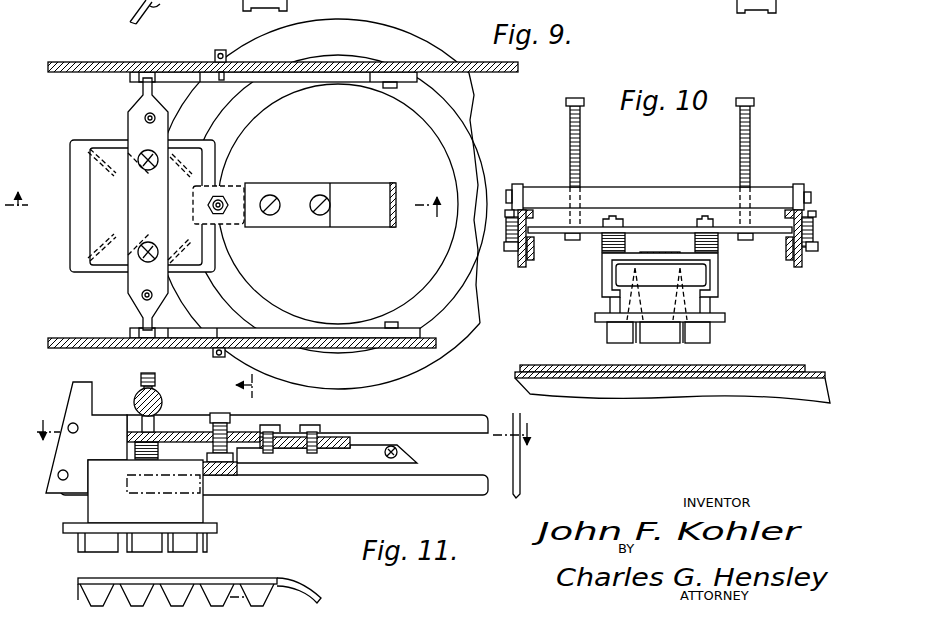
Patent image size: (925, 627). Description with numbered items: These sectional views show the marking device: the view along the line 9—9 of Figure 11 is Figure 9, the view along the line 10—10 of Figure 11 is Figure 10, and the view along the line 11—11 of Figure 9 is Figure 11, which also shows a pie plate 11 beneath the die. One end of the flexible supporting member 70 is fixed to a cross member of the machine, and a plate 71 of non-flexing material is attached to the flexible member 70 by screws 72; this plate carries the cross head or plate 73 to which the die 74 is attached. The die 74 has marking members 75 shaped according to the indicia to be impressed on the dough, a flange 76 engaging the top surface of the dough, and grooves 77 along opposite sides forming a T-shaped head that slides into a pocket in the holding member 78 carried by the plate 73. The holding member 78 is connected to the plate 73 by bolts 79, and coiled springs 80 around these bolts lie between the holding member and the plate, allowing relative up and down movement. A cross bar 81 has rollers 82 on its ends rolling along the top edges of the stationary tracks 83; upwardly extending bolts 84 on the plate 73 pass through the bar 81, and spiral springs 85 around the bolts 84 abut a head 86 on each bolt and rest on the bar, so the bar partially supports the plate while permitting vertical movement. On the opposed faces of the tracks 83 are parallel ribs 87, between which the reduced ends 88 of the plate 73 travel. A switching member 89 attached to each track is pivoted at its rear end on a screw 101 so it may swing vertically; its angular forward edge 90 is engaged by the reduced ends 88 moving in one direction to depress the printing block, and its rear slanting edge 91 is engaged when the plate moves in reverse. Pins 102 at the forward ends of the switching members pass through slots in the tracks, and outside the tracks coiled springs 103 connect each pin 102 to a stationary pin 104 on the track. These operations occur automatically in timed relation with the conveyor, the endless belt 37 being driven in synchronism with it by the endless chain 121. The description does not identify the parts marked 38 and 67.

In FIG. 11, the section line 9— 9 is at (288, 440).
In FIG. 9, the section line 10— 10 is at (255, 386).
In FIG. 11, the section line 10— 10 is at (228, 602).
In FIG. 9, the pie plate 11 is at (222, 197).
In FIG. 10, the pie plate 11 is at (712, 397).
In FIG. 11, the endless belt 37 is at (225, 580).
In FIG. 11, the curved tongue of rack 38 is at (283, 594).
In FIG. 9, the mounting bolt 67 is at (226, 42).
In FIG. 9, the flexible supporting member 70 is at (320, 205).
In FIG. 11, the flexible supporting member 70 is at (341, 435).
In FIG. 9, the plate 71 is at (210, 205).
In FIG. 9, the screws 72 is at (270, 197).
In FIG. 9, the cross head 73 is at (148, 204).
In FIG. 10, the cross head 73 is at (657, 226).
In FIG. 11, the cross head 73 is at (183, 430).
In FIG. 10, the die 74 is at (617, 280).
In FIG. 9, the marking members 75 is at (108, 182).
In FIG. 10, the marking members 75 is at (607, 338).
In FIG. 11, the marking members 75 is at (135, 544).
In FIG. 9, the flange 76 is at (75, 271).
In FIG. 10, the flange 76 is at (595, 319).
In FIG. 11, the flange 76 is at (70, 534).
In FIG. 10, the grooves 77 is at (633, 297).
In FIG. 9, the holding member 78 is at (103, 158).
In FIG. 10, the holding member 78 is at (601, 274).
In FIG. 11, the holding member 78 is at (145, 491).
In FIG. 10, the bolts 79 is at (705, 216).
In FIG. 10, the coiled springs 80 is at (694, 242).
In FIG. 11, the coiled springs 80 is at (134, 450).
In FIG. 11, the cross bar 81 is at (161, 400).
In FIG. 10, the rollers 82 is at (519, 188).
In FIG. 9, the stationary tracks 83 is at (153, 67).
In FIG. 10, the stationary tracks 83 is at (518, 283).
In FIG. 11, the stationary tracks 83 is at (498, 455).
In FIG. 10, the bolts 84 is at (742, 223).
In FIG. 10, the spiral springs 85 is at (570, 133).
In FIG. 11, the spiral springs 85 is at (139, 384).
In FIG. 9, the head 86 is at (145, 207).
In FIG. 10, the head 86 is at (566, 104).
In FIG. 11, the head 86 is at (146, 372).
In FIG. 10, the parallel ribs 87 is at (533, 213).
In FIG. 11, the parallel ribs 87 is at (445, 426).
In FIG. 9, the reduced ends 88 is at (140, 83).
In FIG. 9, the switching member 89 is at (306, 84).
In FIG. 10, the switching member 89 is at (535, 246).
In FIG. 11, the switching member 89 is at (363, 463).
In FIG. 11, the angular forward edge 90 is at (188, 476).
In FIG. 11, the rear slanting edges 91 is at (413, 458).
In FIG. 11, the screws 101 is at (390, 445).
In FIG. 10, the pins 102 is at (650, 259).
In FIG. 10, the coiled springs 103 is at (506, 226).
In FIG. 10, the stationary pin 104 is at (506, 209).
In FIG. 9, the endless chain 121 is at (161, 12).